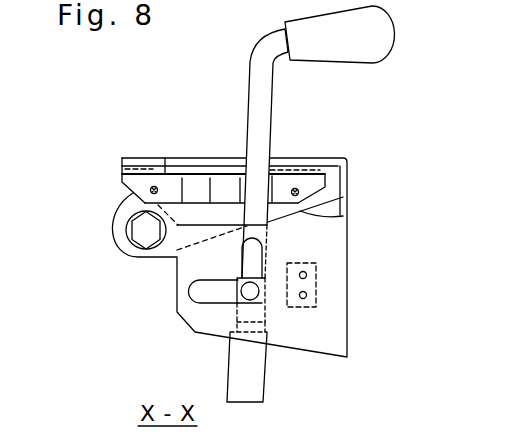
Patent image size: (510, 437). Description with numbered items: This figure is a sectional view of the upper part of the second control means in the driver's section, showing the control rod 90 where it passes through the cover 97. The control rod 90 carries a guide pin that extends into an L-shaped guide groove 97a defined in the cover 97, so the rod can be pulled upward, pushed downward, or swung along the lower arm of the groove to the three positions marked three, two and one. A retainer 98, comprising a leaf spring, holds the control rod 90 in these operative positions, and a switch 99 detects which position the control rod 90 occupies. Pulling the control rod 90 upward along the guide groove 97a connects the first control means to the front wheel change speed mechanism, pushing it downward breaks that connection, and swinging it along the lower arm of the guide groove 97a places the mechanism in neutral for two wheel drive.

The control rod 90 is at (260, 117).
The cover 97 is at (338, 327).
The L-shaped guide groove 97a is at (188, 293).
The retainer 98 is at (197, 188).
The switch 99 is at (312, 273).